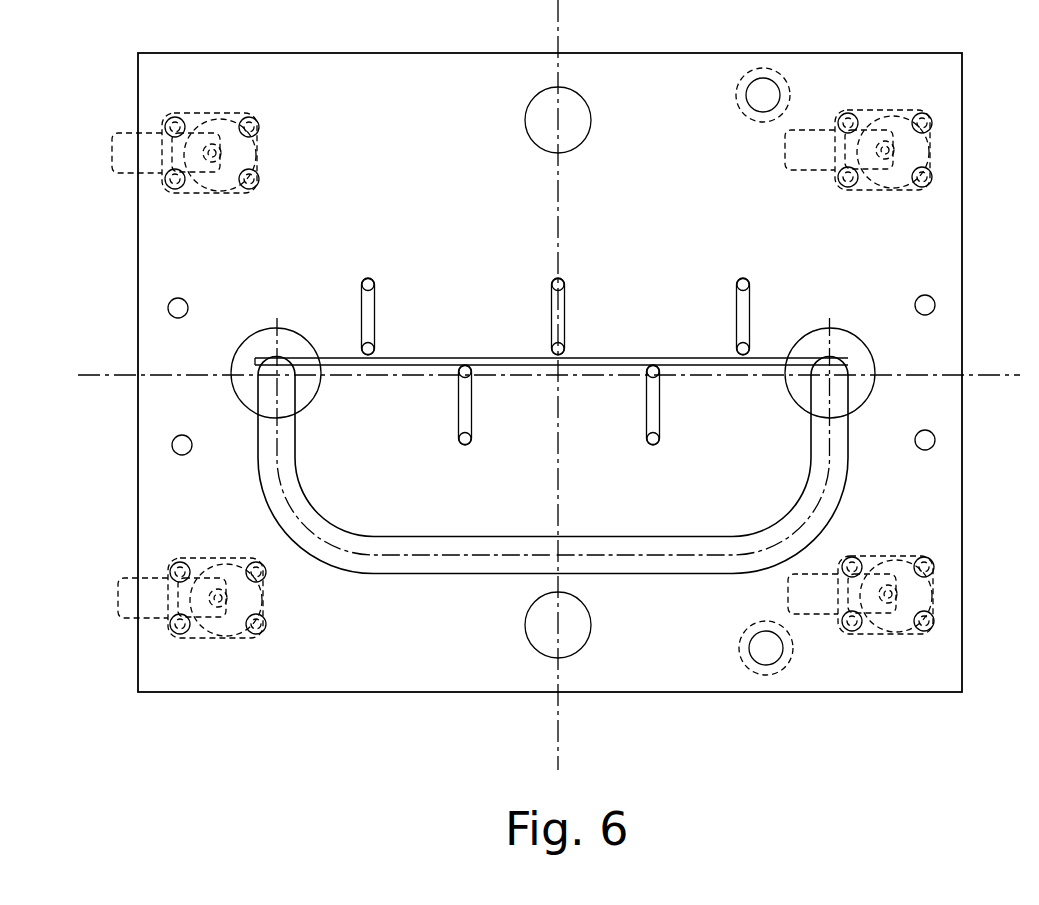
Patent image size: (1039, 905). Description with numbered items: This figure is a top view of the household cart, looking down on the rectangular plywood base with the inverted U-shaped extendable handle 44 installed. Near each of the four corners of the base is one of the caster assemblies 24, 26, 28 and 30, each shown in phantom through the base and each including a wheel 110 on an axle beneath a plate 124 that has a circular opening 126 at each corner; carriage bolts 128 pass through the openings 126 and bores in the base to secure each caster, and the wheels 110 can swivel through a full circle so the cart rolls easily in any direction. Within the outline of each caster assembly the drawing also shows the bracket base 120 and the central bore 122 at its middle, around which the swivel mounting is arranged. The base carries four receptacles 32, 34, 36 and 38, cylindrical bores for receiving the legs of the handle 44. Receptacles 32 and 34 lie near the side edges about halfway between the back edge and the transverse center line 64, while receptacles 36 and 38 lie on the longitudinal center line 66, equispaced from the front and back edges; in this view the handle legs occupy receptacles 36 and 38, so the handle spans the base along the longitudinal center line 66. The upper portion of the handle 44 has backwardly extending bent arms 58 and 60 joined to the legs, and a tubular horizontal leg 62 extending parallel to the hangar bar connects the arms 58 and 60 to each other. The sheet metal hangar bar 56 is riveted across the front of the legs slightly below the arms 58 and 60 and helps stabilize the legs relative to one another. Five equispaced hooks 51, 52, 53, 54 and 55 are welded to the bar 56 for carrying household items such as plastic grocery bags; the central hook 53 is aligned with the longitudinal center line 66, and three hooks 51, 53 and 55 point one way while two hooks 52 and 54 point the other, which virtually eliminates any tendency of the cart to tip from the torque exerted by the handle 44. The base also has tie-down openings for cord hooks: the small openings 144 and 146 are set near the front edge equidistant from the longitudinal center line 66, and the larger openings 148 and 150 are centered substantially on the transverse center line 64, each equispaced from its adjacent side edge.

The caster assembly 24 is at (233, 637).
The caster assembly 26 is at (882, 636).
The caster assembly 28 is at (220, 112).
The caster assembly 30 is at (930, 143).
The receptacle 32 is at (752, 650).
The receptacle 34 is at (754, 98).
The receptacle 36 is at (824, 356).
The receptacle 38 is at (264, 358).
The extendable handle 44 is at (584, 465).
The hook 51 is at (736, 315).
The hook 52 is at (661, 411).
The hook 53 is at (564, 317).
The hook 54 is at (472, 405).
The hook 55 is at (375, 315).
The hangar bar 56 is at (670, 358).
The bent arm 58 is at (296, 460).
The bent arm 60 is at (848, 444).
The tubular horizontal leg 62 is at (641, 574).
The transverse center line 64 is at (558, 748).
The longitudinal center line 66 is at (83, 375).
The wheel 110 is at (122, 150).
The bracket base 120 is at (894, 568).
The center bore 122 is at (892, 594).
The plate 124 is at (894, 188).
The circular opening 126 is at (928, 568).
The carriage bolt 128 is at (848, 118).
The circular opening 144 is at (188, 437).
The circular opening 146 is at (178, 298).
The circular opening 148 is at (536, 621).
The circular opening 150 is at (534, 107).